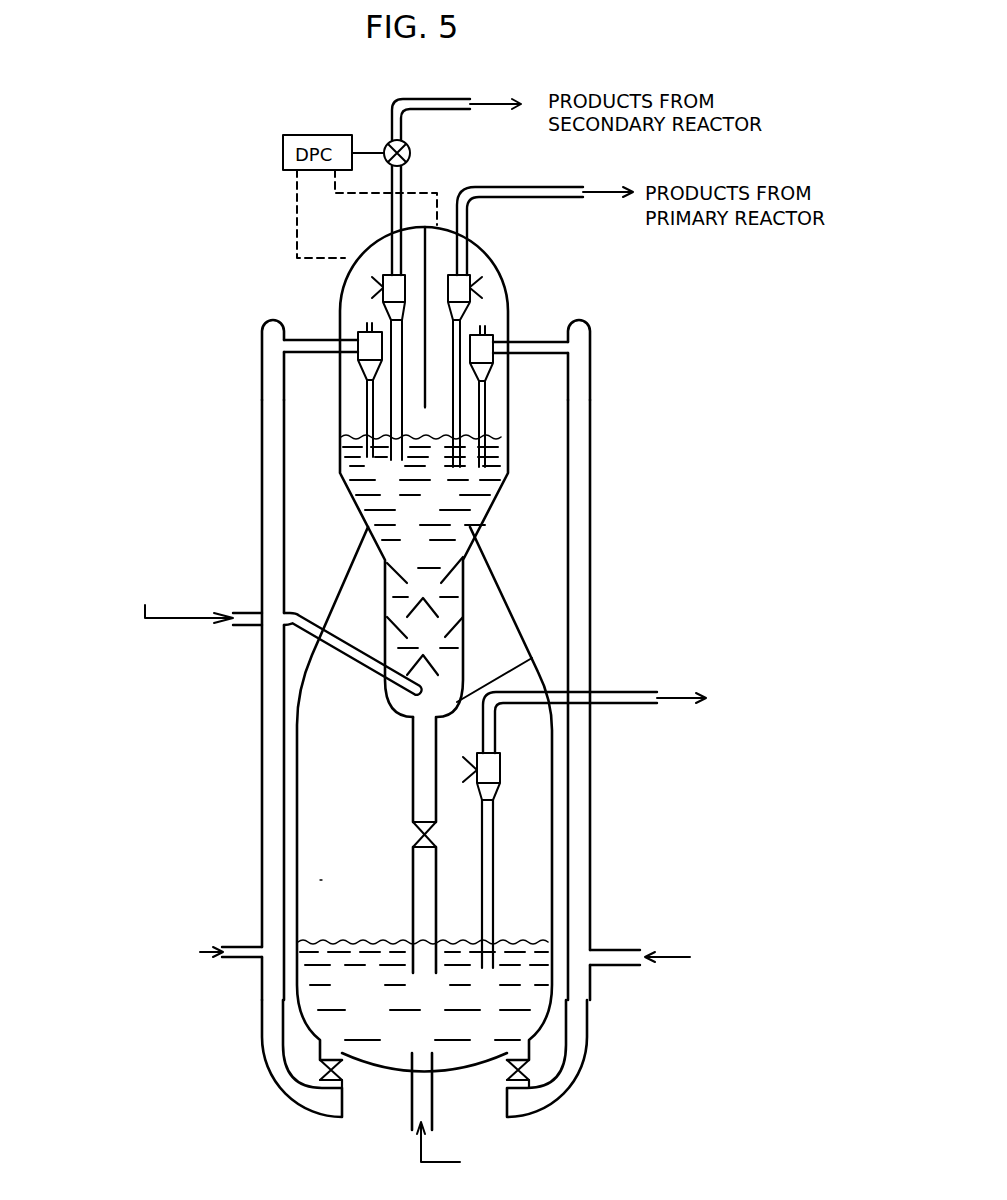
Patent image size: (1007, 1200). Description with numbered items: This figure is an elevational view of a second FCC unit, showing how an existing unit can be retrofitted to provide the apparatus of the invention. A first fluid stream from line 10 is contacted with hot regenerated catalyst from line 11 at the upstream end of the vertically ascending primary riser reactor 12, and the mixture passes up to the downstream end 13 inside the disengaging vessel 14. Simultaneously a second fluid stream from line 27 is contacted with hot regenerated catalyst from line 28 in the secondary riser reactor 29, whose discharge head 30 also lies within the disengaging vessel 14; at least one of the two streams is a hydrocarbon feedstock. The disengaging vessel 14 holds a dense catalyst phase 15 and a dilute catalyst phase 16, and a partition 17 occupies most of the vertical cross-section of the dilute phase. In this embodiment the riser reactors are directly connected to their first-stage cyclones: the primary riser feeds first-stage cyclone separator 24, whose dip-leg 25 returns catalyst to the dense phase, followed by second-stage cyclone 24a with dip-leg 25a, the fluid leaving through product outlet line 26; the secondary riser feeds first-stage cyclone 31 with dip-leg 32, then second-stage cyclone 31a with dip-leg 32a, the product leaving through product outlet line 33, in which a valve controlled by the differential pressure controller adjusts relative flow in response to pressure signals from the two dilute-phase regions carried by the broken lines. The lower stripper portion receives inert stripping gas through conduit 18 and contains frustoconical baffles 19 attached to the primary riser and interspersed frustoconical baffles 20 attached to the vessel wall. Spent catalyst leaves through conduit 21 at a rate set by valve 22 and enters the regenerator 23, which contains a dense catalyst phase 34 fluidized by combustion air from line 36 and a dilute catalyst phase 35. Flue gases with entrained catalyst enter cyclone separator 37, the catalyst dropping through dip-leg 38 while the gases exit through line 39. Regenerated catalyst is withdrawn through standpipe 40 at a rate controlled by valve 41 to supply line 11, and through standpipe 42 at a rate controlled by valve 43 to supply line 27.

The line 10 is at (600, 942).
The line 11 is at (592, 1060).
The primary riser reactor 12 is at (592, 503).
The downstream end 13 is at (588, 322).
The disengaging vessel 14 is at (506, 285).
The dense catalyst phase 15 is at (427, 503).
The dilute catalyst phase 16 is at (447, 428).
The partition 17 is at (426, 260).
The conduit 18 is at (243, 628).
The frustoconical baffles 19 is at (430, 600).
The frustoconical baffles 20 is at (447, 570).
The conduit 21 is at (412, 760).
The valve 22 is at (412, 836).
The regenerator 23 is at (537, 675).
The first-stage cyclone separator 24 is at (495, 362).
The second-stage cyclone 24a is at (447, 275).
The dip-leg 25 is at (487, 420).
The second-stage cyclone dip-leg 25a is at (470, 318).
The product outlet line 26 is at (522, 197).
The line 27 is at (250, 940).
The line 28 is at (270, 1090).
The secondary riser reactor 29 is at (261, 513).
The discharge head 30 is at (275, 320).
The first-stage cyclone 31 is at (357, 338).
The second-stage cyclone 31a is at (382, 280).
The dip-leg 32 is at (366, 400).
The second-stage cyclone dip-leg 32a is at (392, 458).
The product outlet line 33 is at (436, 110).
The dense catalyst phase 34 is at (368, 993).
The dilute catalyst phase 35 is at (345, 906).
The line 36 is at (402, 1120).
The cyclone separator 37 is at (528, 760).
The dip-leg 38 is at (494, 846).
The line 39 is at (602, 706).
The standpipe 40 is at (504, 1068).
The valve 41 is at (505, 1085).
The standpipe 42 is at (345, 1068).
The valve 43 is at (345, 1085).